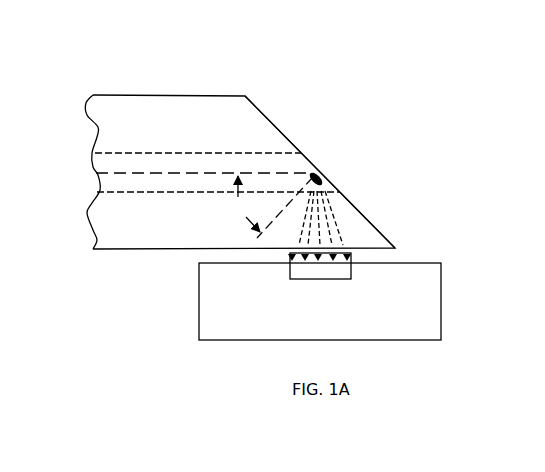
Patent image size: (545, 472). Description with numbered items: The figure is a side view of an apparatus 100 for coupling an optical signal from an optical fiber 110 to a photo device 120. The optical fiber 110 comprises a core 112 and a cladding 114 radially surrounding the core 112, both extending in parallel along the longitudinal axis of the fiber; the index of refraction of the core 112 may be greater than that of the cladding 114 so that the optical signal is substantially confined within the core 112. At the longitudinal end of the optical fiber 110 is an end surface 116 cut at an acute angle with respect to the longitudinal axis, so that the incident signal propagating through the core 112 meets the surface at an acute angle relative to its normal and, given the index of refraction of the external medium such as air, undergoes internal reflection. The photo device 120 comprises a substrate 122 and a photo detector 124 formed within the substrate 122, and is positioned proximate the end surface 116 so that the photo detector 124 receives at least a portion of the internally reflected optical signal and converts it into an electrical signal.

The apparatus 100 is at (352, 76).
The optical fiber 110 is at (198, 92).
The core 112 is at (112, 178).
The cladding 114 is at (110, 129).
The end surface 116 is at (268, 120).
The photo device 120 is at (434, 258).
The substrate 122 is at (420, 300).
The photo detector 124 is at (320, 280).